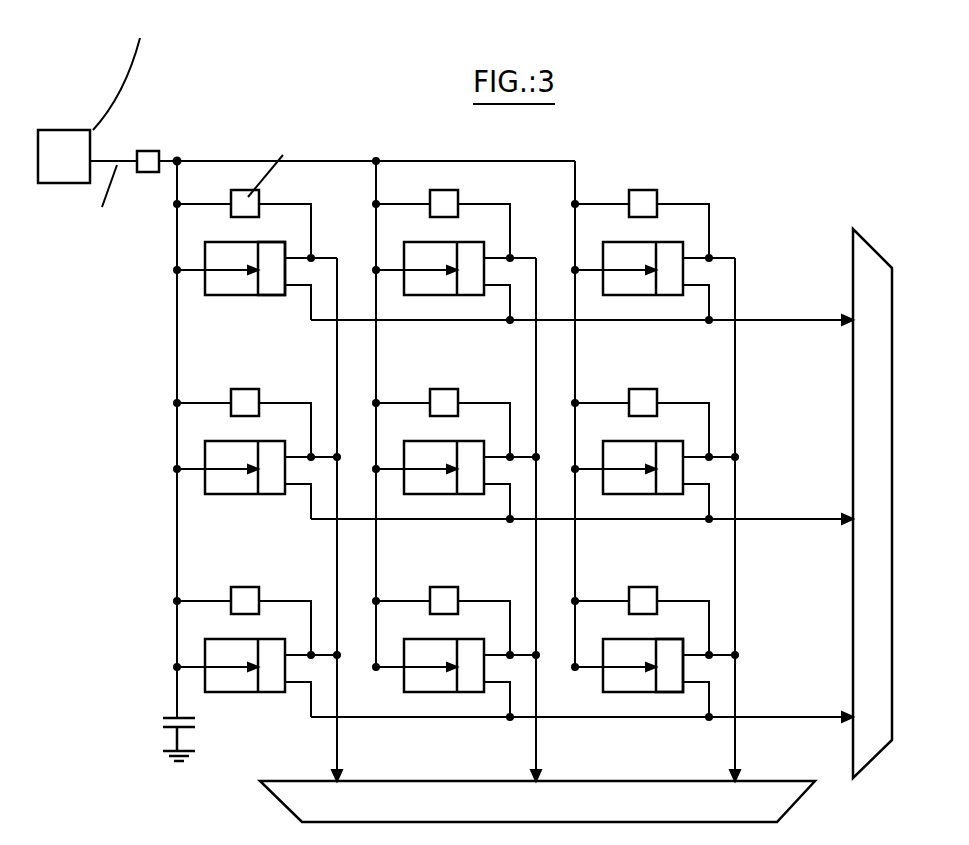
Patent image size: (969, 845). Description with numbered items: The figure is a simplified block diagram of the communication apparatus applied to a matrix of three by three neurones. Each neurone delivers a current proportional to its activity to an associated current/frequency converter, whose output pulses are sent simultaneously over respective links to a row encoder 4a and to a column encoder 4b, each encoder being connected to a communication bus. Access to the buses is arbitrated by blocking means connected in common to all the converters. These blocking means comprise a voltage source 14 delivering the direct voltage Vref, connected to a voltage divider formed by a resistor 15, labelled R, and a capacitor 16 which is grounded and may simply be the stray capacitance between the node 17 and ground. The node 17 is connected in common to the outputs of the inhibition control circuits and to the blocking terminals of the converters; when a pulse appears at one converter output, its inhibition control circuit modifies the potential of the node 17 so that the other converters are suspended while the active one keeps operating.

The voltage source 14 is at (58, 140).
The resistor R is at (147, 150).
The resistor 15 is at (157, 166).
The node 17 is at (177, 158).
The capacitor 16 is at (197, 722).
The row encoder 4a is at (866, 240).
The column encoder 4b is at (795, 805).